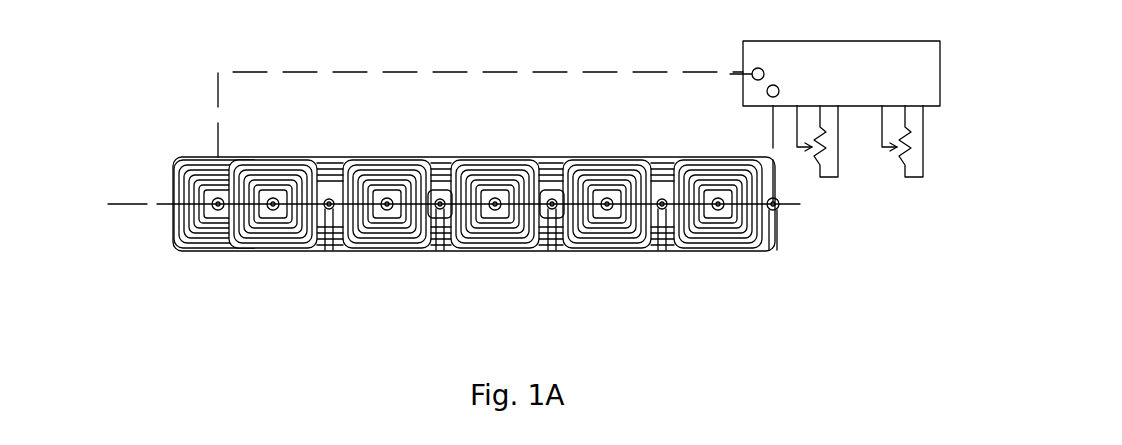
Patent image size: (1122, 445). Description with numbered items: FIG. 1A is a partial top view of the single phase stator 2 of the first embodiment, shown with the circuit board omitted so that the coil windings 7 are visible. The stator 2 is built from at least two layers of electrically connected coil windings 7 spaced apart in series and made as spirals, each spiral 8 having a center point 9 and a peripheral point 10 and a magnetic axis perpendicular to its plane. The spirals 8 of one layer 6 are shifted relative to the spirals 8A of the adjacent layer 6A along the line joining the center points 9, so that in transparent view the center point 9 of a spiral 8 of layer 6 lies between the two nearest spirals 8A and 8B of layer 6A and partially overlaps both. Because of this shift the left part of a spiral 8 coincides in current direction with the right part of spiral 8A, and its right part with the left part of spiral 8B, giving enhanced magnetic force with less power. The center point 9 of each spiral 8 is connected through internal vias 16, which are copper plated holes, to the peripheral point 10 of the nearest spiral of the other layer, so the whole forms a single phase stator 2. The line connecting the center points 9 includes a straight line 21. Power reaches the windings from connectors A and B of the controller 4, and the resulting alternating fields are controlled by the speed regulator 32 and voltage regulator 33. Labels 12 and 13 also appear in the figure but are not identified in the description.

The stator 2 is at (250, 128).
The controller 4 is at (822, 67).
The layer 6 is at (290, 160).
The adjacent layer 6A is at (435, 235).
The coil winding 7 is at (365, 160).
The spiral 8 is at (475, 160).
The spiral of adjacent layer 8A is at (178, 157).
The spiral of adjacent layer 8B is at (550, 160).
The center point 9 is at (360, 235).
The peripheral point 10 is at (550, 210).
The connecting conductor 12 is at (225, 230).
The common line 13 is at (140, 205).
The straight line 21 is at (448, 271).
The internal via 16 is at (605, 200).
The speed regulator 32 is at (832, 190).
The voltage regulator 33 is at (913, 190).